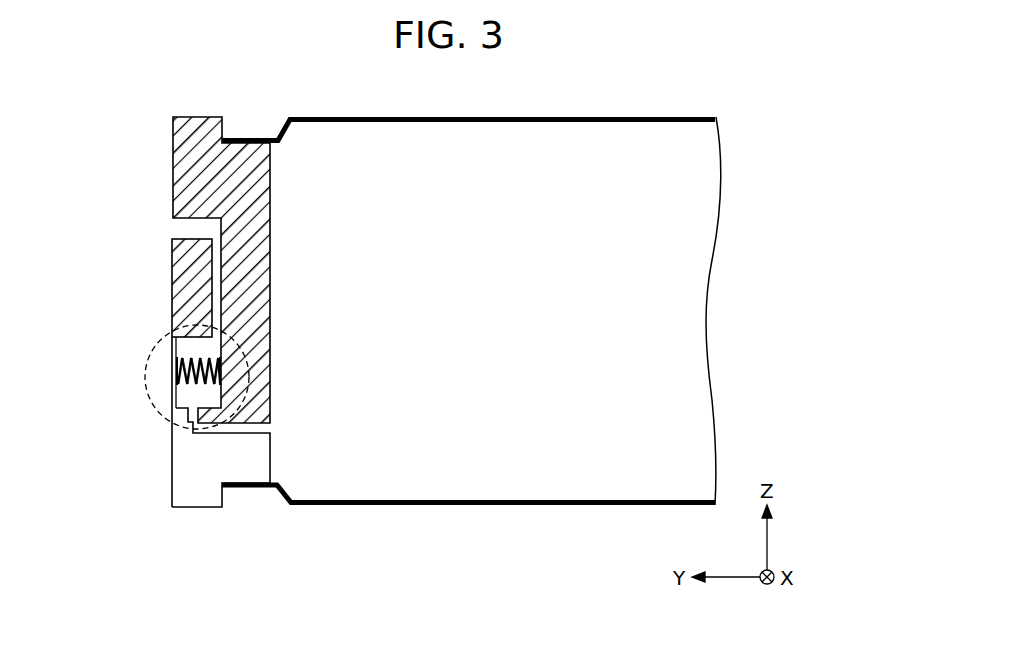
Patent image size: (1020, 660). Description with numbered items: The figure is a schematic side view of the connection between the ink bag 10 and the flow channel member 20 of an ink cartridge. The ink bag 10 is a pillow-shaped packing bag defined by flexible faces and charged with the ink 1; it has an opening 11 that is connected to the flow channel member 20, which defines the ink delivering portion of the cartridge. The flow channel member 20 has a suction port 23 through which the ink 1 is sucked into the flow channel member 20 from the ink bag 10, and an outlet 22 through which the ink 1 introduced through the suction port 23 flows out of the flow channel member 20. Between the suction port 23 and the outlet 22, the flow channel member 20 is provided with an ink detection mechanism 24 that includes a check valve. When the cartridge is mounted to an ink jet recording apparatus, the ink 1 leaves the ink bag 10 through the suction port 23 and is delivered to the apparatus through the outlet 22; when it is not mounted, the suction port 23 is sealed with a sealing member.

The ink 1 is at (575, 434).
The ink bag 10 is at (612, 118).
The opening 11 is at (264, 143).
The flow channel member 20 is at (180, 160).
The outlet 22 is at (172, 390).
The suction port 23 is at (262, 430).
The ink detection mechanism 24 is at (145, 370).